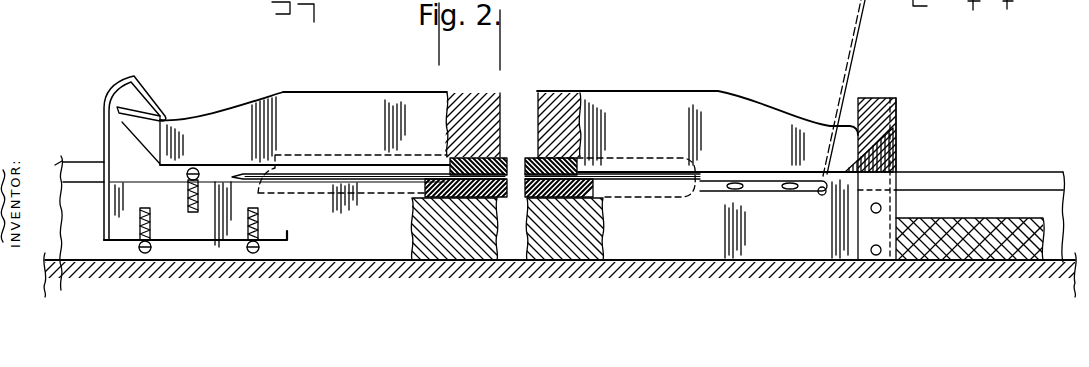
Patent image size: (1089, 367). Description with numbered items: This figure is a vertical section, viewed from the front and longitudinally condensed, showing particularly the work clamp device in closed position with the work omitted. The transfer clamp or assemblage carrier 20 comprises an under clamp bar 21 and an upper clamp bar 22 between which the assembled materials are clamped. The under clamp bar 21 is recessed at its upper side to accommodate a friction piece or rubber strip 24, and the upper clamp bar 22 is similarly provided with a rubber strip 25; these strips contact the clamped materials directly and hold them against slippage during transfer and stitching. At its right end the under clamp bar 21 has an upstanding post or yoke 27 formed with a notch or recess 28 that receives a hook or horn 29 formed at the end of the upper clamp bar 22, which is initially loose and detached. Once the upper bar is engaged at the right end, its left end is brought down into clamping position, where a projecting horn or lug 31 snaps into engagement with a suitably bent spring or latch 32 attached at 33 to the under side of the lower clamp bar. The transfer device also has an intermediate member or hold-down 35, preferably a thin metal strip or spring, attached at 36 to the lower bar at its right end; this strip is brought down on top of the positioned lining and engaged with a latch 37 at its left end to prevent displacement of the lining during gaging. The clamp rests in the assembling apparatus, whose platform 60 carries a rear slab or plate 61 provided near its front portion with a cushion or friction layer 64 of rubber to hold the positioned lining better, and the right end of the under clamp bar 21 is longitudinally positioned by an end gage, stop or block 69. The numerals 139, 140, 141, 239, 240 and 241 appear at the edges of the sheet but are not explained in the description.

The transfer clamp or assemblage carrier 20 is at (792, 73).
The under clamp bar 21 is at (400, 262).
The upper clamp bar 22 is at (437, 100).
The friction piece or rubber strip 24 is at (526, 190).
The rubber strip 25 is at (525, 165).
The upstanding post or yoke 27 is at (897, 106).
The notch or recess 28 is at (889, 152).
The hook or horn 29 is at (887, 100).
The projecting horn or lug 31 is at (140, 128).
The spring or latch 32 is at (120, 82).
The attachment of the latch 33 is at (186, 248).
The intermediate member or hold-down 35 is at (334, 173).
The attachment of the hold-down 36 is at (822, 196).
The latch 37 is at (246, 170).
The platform 60 is at (560, 265).
The rear slab or plate 61 is at (1022, 207).
The cushion or friction layer 64 is at (999, 178).
The end gage, stop or block 69 is at (978, 224).
The adjacent figure numeral 139 is at (1024, 15).
The adjacent figure numeral 140 is at (934, 15).
The adjacent figure numeral 141 is at (976, 25).
The adjacent figure numeral 239 is at (144, 7).
The adjacent figure numeral 240 is at (204, 7).
The adjacent figure numeral 241 is at (96, 7).